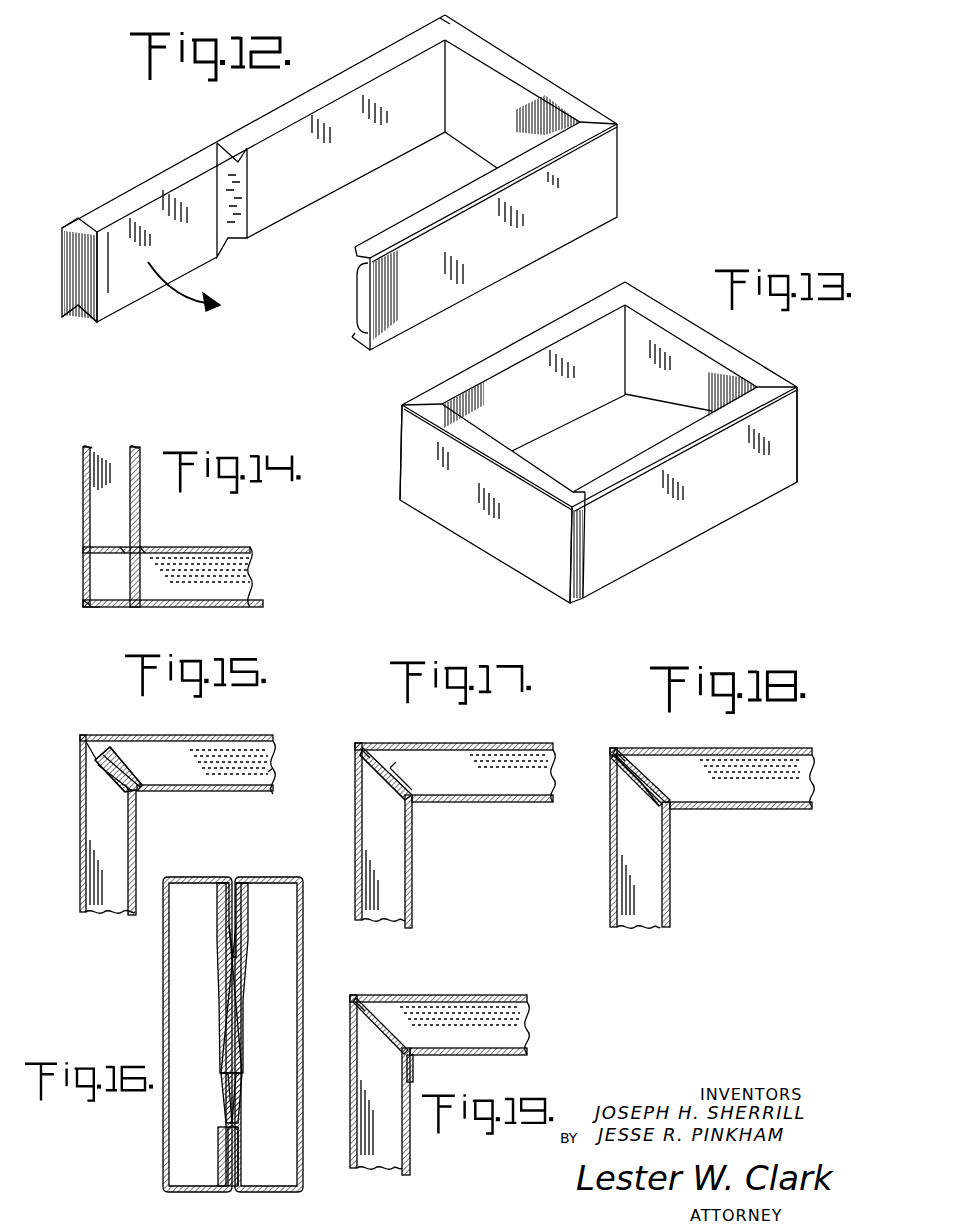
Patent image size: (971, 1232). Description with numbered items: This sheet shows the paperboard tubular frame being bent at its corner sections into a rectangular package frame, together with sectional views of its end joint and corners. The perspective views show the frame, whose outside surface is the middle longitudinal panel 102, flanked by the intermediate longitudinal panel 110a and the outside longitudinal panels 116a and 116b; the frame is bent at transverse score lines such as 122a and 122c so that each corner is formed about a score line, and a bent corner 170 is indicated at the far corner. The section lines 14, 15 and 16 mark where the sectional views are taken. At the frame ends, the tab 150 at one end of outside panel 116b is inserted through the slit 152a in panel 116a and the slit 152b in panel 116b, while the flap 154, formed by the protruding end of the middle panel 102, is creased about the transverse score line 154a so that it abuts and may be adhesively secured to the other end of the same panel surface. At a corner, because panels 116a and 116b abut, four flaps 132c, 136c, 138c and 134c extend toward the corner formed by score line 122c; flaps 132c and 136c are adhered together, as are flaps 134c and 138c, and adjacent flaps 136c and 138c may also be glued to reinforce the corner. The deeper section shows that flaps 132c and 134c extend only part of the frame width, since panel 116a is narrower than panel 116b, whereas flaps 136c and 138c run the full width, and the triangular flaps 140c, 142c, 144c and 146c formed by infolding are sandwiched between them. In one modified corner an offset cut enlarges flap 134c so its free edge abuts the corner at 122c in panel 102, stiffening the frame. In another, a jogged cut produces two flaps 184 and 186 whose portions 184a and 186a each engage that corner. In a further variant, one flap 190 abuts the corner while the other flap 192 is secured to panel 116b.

In FIG. 12, the middle longitudinal panel 102 is at (598, 172).
In FIG. 13, the middle longitudinal panel 102 is at (527, 560).
In FIG. 14, the middle longitudinal panel 102 is at (217, 607).
In FIG. 15, the middle longitudinal panel 102 is at (247, 735).
In FIG. 16, the middle longitudinal panel 102 is at (302, 983).
In FIG. 17, the middle longitudinal panel 102 is at (502, 743).
In FIG. 18, the middle longitudinal panel 102 is at (748, 750).
In FIG. 19, the middle longitudinal panel 102 is at (463, 995).
In FIG. 12, the intermediate longitudinal panel 110a is at (165, 175).
In FIG. 13, the intermediate longitudinal panel 110a is at (647, 305).
In FIG. 14, the outside longitudinal panel 116a is at (89, 447).
In FIG. 15, the outside longitudinal panel 116a is at (268, 772).
In FIG. 12, the outside longitudinal panel 116b is at (341, 110).
In FIG. 13, the outside longitudinal panel 116b is at (570, 345).
In FIG. 14, the outside longitudinal panel 116b is at (136, 447).
In FIG. 15, the outside longitudinal panel 116b is at (247, 793).
In FIG. 17, the outside longitudinal panel 116b is at (502, 802).
In FIG. 18, the outside longitudinal panel 116b is at (753, 810).
In FIG. 19, the outside longitudinal panel 116b is at (408, 1155).
In FIG. 13, the transverse score line 122a is at (797, 450).
In FIG. 13, the transverse score line 122c is at (402, 455).
In FIG. 15, the transverse score line 122c is at (83, 735).
In FIG. 17, the transverse score line 122c is at (358, 742).
In FIG. 18, the transverse score line 122c is at (612, 747).
In FIG. 19, the transverse score line 122c is at (352, 995).
In FIG. 12, the tab 150 is at (357, 297).
In FIG. 14, the tab 150 is at (102, 547).
In FIG. 14, the slit 152a is at (130, 547).
In FIG. 12, the slit 152b is at (112, 243).
In FIG. 14, the slit 152b is at (140, 547).
In FIG. 12, the flap 154 is at (67, 285).
In FIG. 13, the flap 154 is at (583, 577).
In FIG. 14, the flap 154 is at (95, 607).
In FIG. 12, the transverse score line 154a is at (78, 248).
In FIG. 13, the transverse score line 154a is at (570, 582).
In FIG. 14, the transverse score line 154a is at (85, 603).
In FIG. 12, the bent corner 170 is at (450, 32).
In FIG. 15, the flap 132c is at (102, 750).
In FIG. 16, the flap 132c is at (243, 960).
In FIG. 17, the flap 132c is at (402, 782).
In FIG. 15, the flap 134c is at (103, 777).
In FIG. 16, the flap 134c is at (218, 967).
In FIG. 17, the flap 134c is at (397, 790).
In FIG. 15, the flap 136c is at (123, 758).
In FIG. 16, the flap 136c is at (238, 1102).
In FIG. 15, the flap 138c is at (110, 788).
In FIG. 16, the flap 138c is at (222, 1107).
In FIG. 16, the triangular flap 140c is at (266, 880).
In FIG. 16, the triangular flap 142c is at (208, 880).
In FIG. 16, the triangular flap 144c is at (238, 1153).
In FIG. 16, the triangular flap 146c is at (222, 1153).
In FIG. 18, the flap 184 is at (652, 810).
In FIG. 18, the flap portion 184a is at (630, 783).
In FIG. 18, the flap 186 is at (662, 793).
In FIG. 18, the flap portion 186a is at (655, 750).
In FIG. 19, the flap 190 is at (387, 1027).
In FIG. 19, the flap 192 is at (413, 1070).
In FIG. 13, the section line 14 is at (543, 513).
In FIG. 13, the section line 15 is at (365, 418).
In FIG. 15, the section line 16 is at (202, 708).